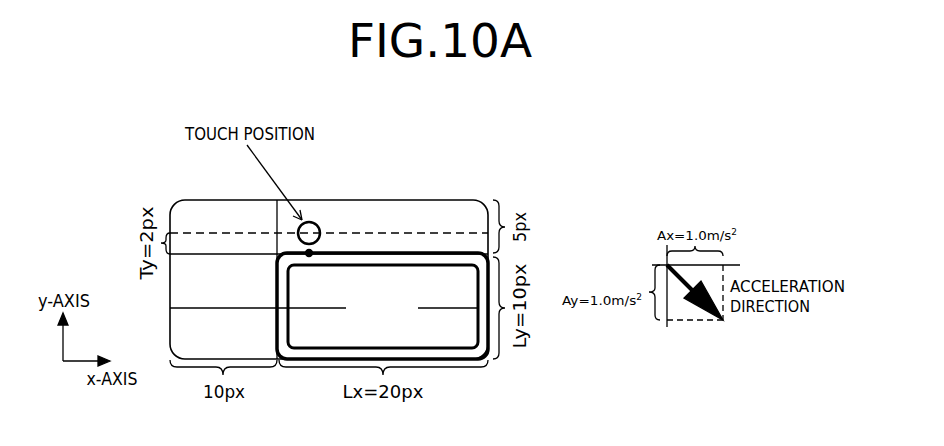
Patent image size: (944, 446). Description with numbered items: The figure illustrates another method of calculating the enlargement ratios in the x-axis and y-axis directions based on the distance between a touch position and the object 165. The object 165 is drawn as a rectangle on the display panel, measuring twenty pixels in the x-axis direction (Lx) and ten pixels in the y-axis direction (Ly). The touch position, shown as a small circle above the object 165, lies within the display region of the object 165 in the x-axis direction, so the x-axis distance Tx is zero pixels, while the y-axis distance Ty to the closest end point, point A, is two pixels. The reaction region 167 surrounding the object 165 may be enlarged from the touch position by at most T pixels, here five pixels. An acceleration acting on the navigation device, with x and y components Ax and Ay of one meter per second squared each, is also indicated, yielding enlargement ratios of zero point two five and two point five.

The reaction region 167 is at (448, 200).
The object 165 is at (489, 361).
The point A is at (309, 252).